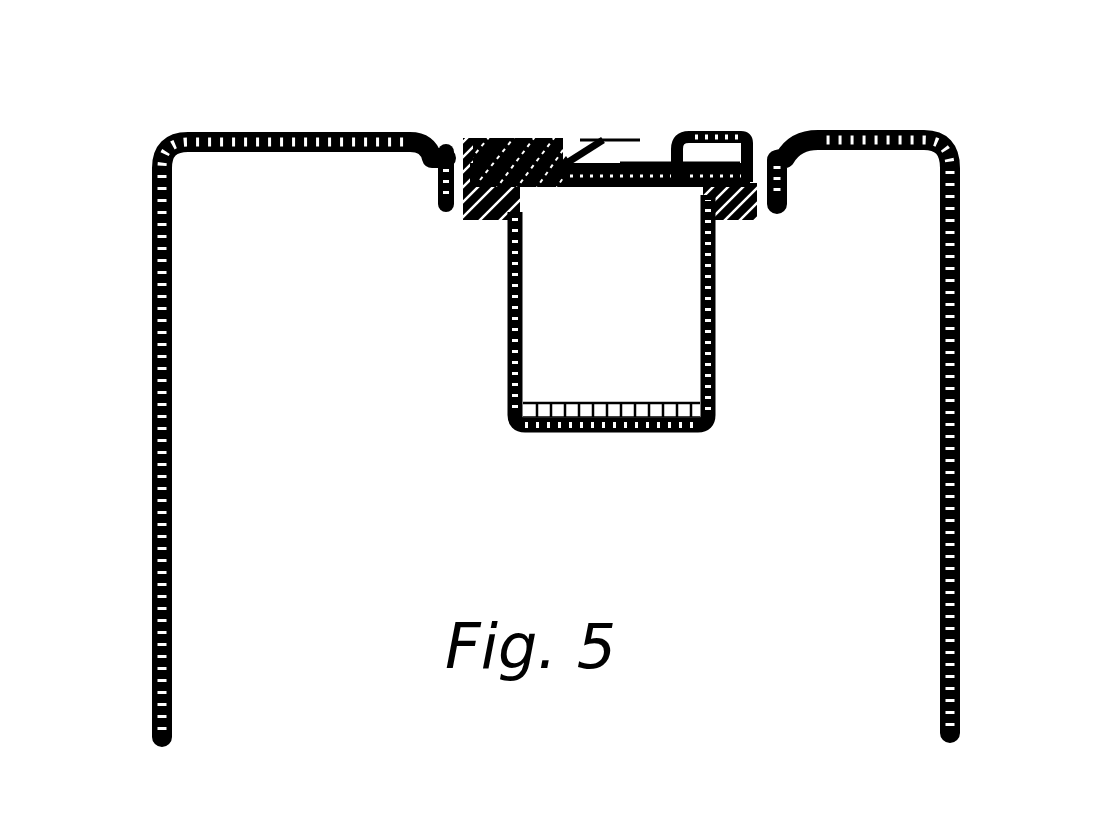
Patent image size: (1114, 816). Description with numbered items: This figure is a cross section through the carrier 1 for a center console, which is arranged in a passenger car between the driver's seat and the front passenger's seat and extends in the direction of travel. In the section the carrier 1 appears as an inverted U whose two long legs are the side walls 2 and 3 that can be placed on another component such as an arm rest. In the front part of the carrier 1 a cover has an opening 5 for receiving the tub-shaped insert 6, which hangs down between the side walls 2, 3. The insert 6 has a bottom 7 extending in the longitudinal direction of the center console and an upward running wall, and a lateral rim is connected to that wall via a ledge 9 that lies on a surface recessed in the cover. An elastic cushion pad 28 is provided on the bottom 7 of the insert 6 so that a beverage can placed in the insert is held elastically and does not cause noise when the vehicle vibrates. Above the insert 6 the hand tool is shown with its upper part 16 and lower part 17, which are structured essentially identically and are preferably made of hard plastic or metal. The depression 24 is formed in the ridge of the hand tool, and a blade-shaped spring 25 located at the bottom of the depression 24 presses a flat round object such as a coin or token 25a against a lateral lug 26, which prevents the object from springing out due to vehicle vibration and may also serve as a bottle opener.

The carrier 1 is at (619, 438).
The side wall 2 is at (172, 428).
The side wall 3 is at (937, 487).
The opening 5 is at (764, 183).
The tub-shaped insert 6 is at (607, 355).
The bottom 7 is at (732, 340).
The ledge 9 is at (425, 176).
The upper part 16 is at (727, 137).
The lower part 17 is at (680, 188).
The depression 24 is at (660, 130).
The spring 25 is at (675, 109).
The token 25a is at (599, 134).
The lateral lug 26 is at (552, 131).
The elastic cushion pad 28 is at (627, 413).